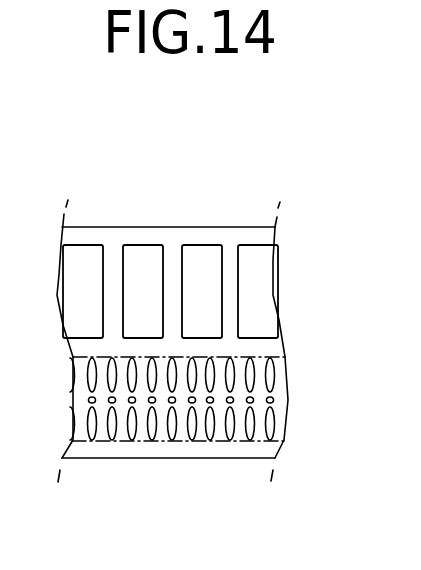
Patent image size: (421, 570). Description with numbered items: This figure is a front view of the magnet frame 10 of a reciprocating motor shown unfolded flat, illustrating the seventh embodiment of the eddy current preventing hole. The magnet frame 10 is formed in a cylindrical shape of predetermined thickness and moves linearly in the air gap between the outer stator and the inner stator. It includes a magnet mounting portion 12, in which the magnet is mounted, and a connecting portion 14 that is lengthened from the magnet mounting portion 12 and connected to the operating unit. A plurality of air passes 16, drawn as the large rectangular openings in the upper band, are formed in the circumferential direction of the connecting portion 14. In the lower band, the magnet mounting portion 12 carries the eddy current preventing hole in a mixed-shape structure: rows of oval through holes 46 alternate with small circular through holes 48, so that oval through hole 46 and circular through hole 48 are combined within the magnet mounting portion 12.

The magnet frame 10 is at (244, 192).
The magnet mounting portion 12 is at (232, 445).
The connecting portion 14 is at (112, 238).
The air pass 16 is at (207, 255).
The oval through hole 46 is at (133, 433).
The circular through hole 48 is at (110, 404).